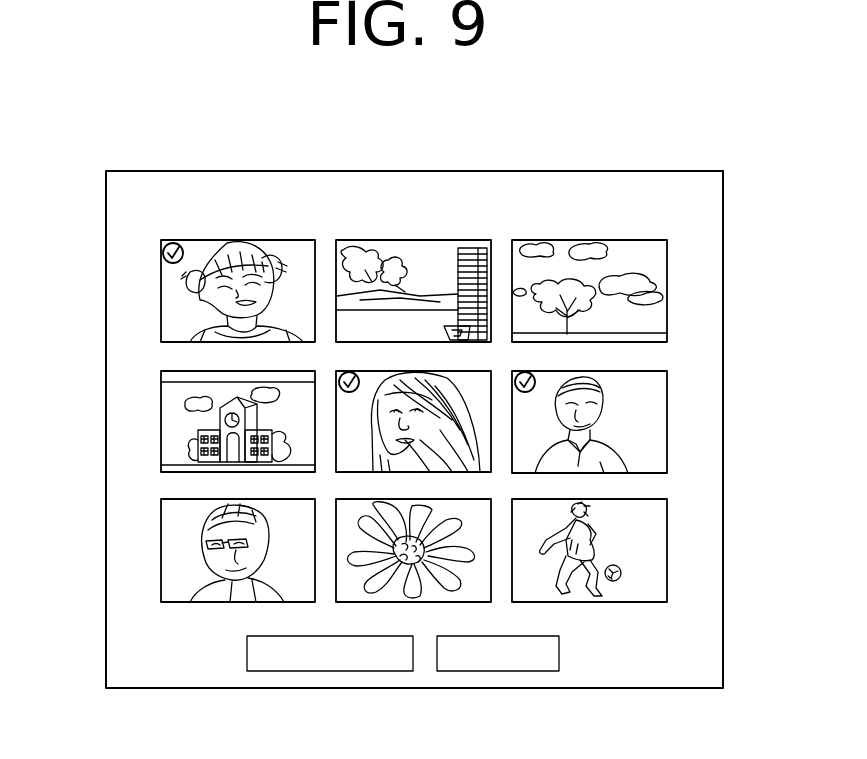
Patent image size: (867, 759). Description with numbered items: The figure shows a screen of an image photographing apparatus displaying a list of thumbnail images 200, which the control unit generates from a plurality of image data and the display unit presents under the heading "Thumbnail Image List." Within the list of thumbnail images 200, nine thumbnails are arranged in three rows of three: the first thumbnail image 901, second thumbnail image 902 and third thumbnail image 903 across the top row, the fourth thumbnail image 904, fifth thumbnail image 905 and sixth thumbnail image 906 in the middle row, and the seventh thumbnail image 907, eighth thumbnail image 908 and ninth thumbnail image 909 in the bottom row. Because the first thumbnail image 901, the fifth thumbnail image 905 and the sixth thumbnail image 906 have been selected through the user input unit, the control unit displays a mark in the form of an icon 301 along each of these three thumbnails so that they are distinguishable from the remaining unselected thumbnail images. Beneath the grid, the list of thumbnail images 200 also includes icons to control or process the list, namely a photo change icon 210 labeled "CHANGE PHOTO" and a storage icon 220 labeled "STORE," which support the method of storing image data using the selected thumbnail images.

The list of thumbnail images 200 is at (690, 171).
The icon 301 is at (516, 378).
The first thumbnail image 901 is at (275, 240).
The second thumbnail image 902 is at (483, 240).
The third thumbnail image 903 is at (600, 240).
The fourth thumbnail image 904 is at (161, 413).
The fifth thumbnail image 905 is at (345, 444).
The sixth thumbnail image 906 is at (667, 400).
The seventh thumbnail image 907 is at (161, 556).
The eighth thumbnail image 908 is at (430, 602).
The ninth thumbnail image 909 is at (667, 533).
The photo change icon 210 is at (292, 671).
The storage icon 220 is at (503, 671).